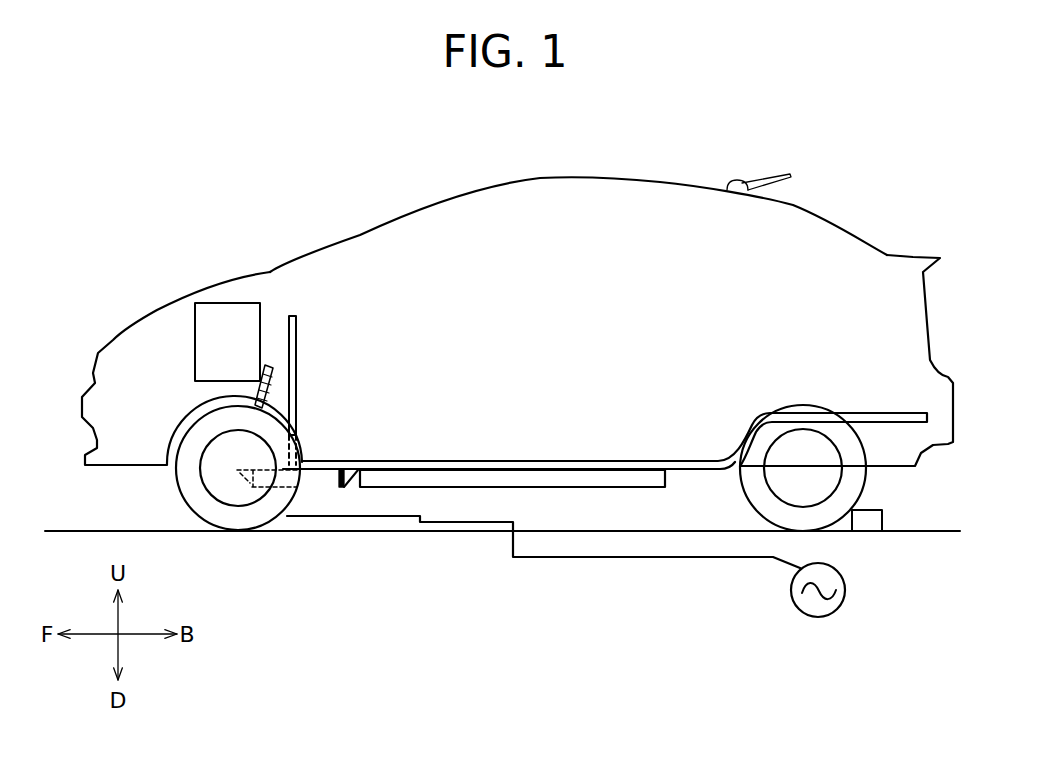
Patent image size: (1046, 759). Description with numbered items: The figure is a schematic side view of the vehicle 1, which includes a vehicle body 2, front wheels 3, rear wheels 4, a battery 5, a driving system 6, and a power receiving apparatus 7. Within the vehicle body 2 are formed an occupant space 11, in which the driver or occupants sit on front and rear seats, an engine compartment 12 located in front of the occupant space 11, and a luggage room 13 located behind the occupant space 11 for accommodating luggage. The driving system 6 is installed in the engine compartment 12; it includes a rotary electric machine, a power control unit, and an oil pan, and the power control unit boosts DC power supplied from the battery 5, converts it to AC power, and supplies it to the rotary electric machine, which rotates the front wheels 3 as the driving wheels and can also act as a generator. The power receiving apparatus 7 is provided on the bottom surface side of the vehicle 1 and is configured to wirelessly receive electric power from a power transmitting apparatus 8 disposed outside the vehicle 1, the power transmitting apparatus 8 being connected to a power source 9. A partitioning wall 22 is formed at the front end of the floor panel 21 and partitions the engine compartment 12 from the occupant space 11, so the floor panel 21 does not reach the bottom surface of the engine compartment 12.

The vehicle 1 is at (296, 193).
The vehicle body 2 is at (564, 177).
The front wheels 3 is at (177, 493).
The rear wheels 4 is at (865, 495).
The battery 5 is at (453, 480).
The driving system 6 is at (217, 303).
The power receiving apparatus 7 is at (311, 480).
The power transmitting apparatus 8 is at (377, 527).
The power source 9 is at (848, 587).
The occupant space 11 is at (489, 218).
The engine compartment 12 is at (136, 294).
The luggage room 13 is at (842, 264).
The floor panel 21 is at (537, 465).
The partitioning wall 22 is at (298, 351).